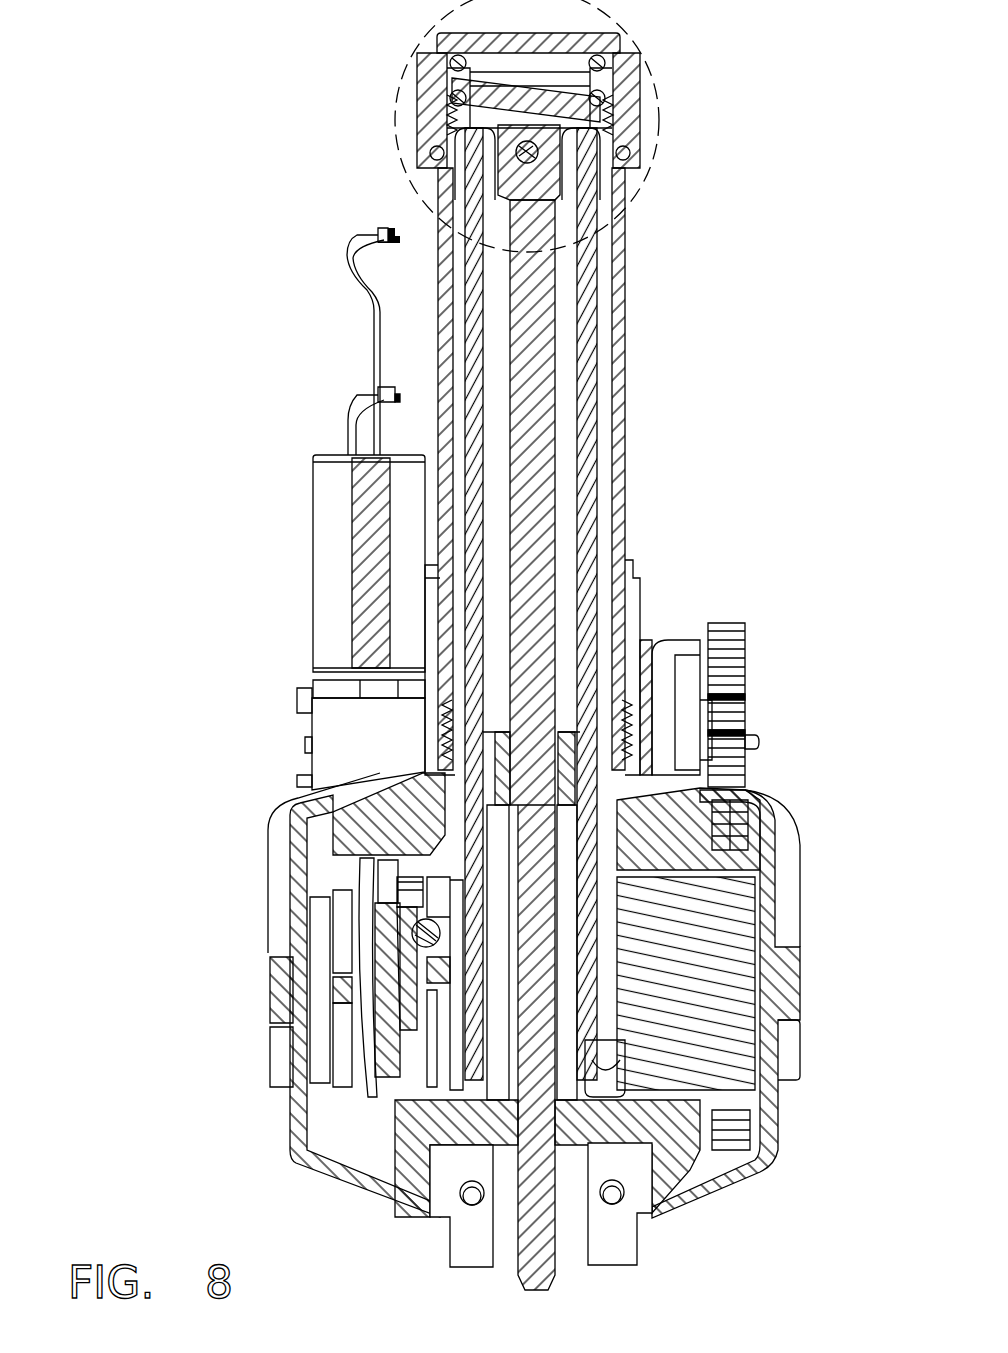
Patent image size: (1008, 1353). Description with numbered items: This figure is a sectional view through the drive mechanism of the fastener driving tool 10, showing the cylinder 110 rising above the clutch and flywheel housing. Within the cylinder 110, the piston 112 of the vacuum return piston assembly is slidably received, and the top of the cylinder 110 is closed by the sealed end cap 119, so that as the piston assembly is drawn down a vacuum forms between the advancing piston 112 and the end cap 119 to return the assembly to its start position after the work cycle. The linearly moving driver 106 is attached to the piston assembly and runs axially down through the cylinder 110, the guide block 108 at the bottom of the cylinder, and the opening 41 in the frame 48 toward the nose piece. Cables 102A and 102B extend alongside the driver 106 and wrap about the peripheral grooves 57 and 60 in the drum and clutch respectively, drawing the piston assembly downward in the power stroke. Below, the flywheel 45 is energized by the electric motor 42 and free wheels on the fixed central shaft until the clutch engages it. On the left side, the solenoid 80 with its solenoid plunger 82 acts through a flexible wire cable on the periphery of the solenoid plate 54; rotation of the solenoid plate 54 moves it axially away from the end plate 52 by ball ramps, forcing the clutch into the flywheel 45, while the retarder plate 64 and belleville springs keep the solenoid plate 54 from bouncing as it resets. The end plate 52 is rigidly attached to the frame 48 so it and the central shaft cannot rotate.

The spindle assembly 10 is at (393, 106).
The piston 112 is at (497, 105).
The sealed end cap 119 is at (644, 104).
The cylinder 110 is at (627, 232).
The driver 106 is at (565, 408).
The cable 102A is at (476, 322).
The cable 102B is at (590, 318).
The guide block 108 is at (566, 735).
The electric motor 42 is at (665, 642).
The solenoid 80 is at (318, 604).
The solenoid plunger 82 is at (356, 538).
The end plate 52 is at (318, 1108).
The solenoid plate 54 is at (345, 1088).
The retarder plate 64 is at (386, 1125).
The flywheel 45 is at (772, 990).
The frame 48 is at (757, 1180).
The peripheral groove 60 is at (626, 1085).
The peripheral groove 57 is at (430, 1152).
The opening 41 is at (655, 1205).